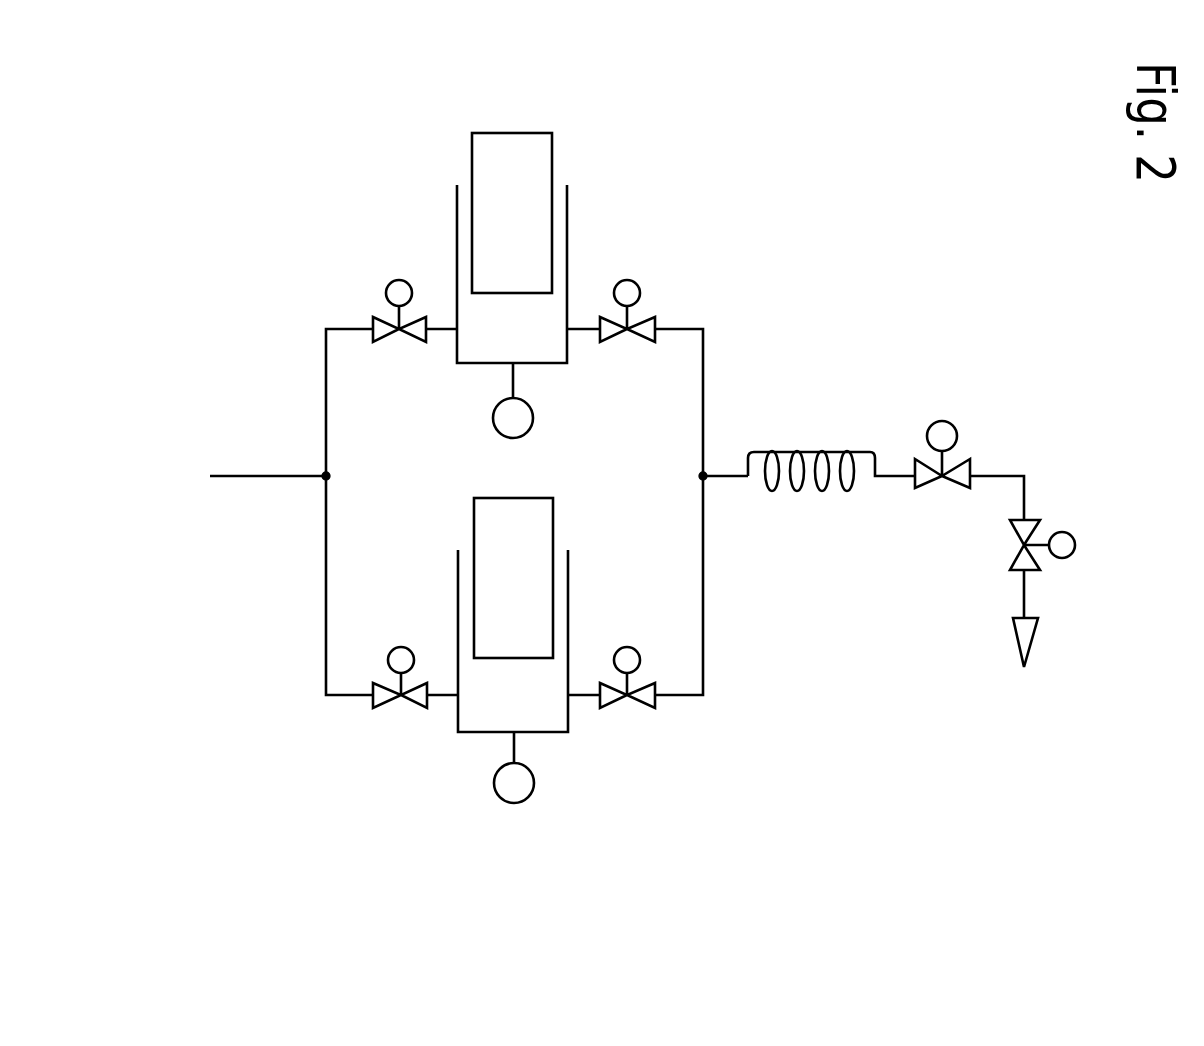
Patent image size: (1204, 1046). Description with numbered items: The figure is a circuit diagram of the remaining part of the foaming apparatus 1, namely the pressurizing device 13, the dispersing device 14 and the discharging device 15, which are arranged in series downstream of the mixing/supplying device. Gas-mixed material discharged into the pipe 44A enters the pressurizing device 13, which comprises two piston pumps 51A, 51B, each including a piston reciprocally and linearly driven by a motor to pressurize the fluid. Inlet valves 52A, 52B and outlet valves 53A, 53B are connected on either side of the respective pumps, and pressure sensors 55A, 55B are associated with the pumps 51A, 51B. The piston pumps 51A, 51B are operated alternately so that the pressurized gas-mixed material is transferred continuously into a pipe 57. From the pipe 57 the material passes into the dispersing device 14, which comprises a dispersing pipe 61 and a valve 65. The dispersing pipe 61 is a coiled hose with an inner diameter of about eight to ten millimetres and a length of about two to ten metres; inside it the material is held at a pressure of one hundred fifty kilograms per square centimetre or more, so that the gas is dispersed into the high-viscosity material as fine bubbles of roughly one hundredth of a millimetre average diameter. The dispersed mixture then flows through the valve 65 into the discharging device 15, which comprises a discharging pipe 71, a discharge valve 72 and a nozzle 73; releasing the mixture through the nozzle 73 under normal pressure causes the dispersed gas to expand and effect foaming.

The foaming apparatus 1 is at (344, 102).
The pressurizing device 13 is at (247, 203).
The dispersing device 14 is at (870, 367).
The discharging device 15 is at (1085, 418).
The pipe 44A is at (252, 476).
The piston pump 51A is at (567, 207).
The piston pump 51B is at (568, 568).
The valve 52A is at (399, 335).
The valve 52B is at (401, 702).
The valve 53A is at (627, 335).
The valve 53B is at (627, 702).
The pressure sensor 55A is at (528, 430).
The pressure sensor 55B is at (513, 803).
The pipe 57 is at (703, 430).
The dispersing pipe 61 is at (820, 492).
The valve 65 is at (942, 482).
The discharging pipe 71 is at (1025, 483).
The discharge valve 72 is at (1075, 553).
The nozzle 73 is at (1037, 637).